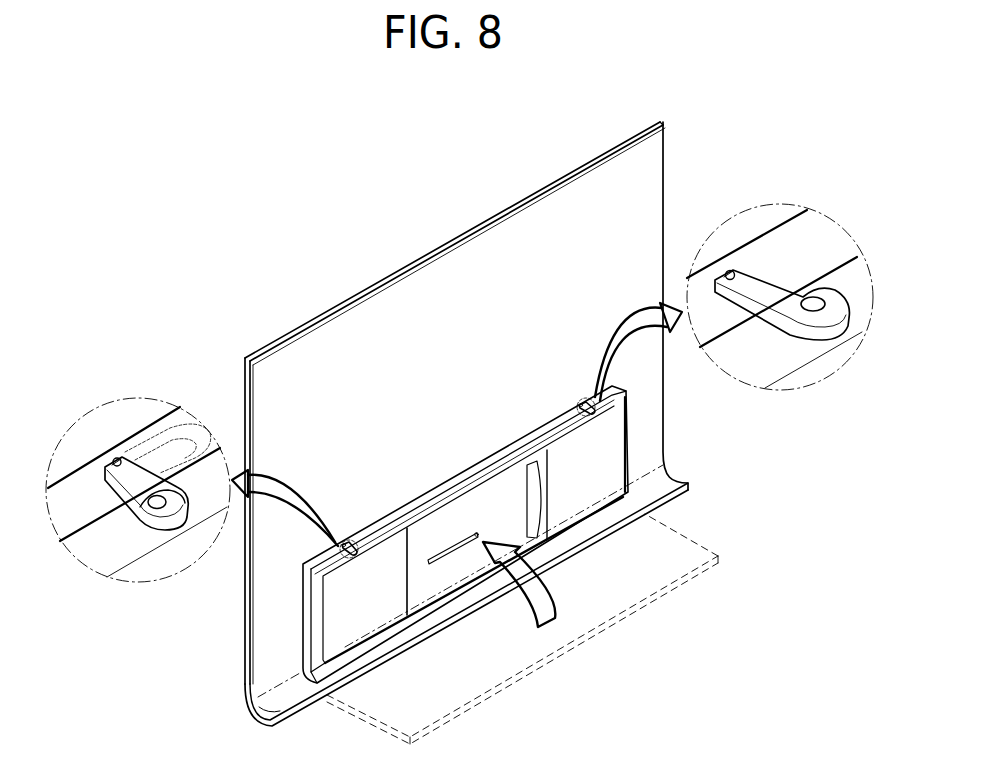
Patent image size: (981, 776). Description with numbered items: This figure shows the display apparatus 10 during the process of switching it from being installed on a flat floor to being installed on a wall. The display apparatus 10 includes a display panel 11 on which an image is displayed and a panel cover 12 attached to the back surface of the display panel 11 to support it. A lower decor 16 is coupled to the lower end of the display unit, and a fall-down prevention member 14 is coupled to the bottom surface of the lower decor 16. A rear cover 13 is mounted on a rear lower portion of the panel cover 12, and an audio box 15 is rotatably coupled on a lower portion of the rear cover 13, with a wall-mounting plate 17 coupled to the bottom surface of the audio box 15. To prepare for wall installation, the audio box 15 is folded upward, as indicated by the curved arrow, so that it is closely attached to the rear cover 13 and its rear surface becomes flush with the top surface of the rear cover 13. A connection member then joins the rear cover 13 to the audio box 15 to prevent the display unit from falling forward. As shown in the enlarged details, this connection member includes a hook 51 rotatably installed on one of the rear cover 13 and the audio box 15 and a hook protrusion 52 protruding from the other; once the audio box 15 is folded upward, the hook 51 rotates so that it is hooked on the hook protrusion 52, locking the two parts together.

The display apparatus 10 is at (452, 173).
The display panel 11 is at (245, 363).
The panel cover 12 is at (292, 352).
The rear cover 13 is at (303, 608).
The fall-down prevention member 14 is at (855, 280).
The audio box 15 is at (317, 633).
The lower decor 16 is at (257, 712).
The wall-mounting plate 17 is at (495, 503).
The hook 51 is at (763, 298).
The hook protrusion 52 is at (813, 304).